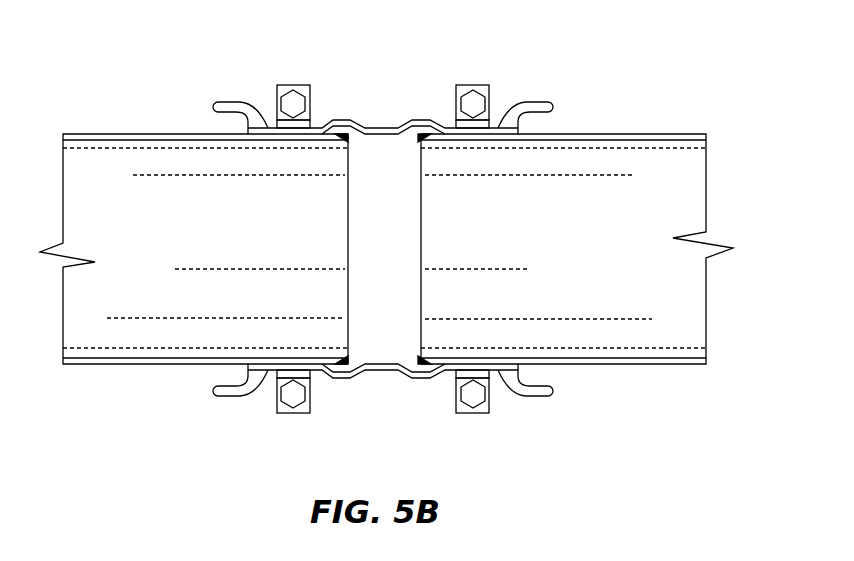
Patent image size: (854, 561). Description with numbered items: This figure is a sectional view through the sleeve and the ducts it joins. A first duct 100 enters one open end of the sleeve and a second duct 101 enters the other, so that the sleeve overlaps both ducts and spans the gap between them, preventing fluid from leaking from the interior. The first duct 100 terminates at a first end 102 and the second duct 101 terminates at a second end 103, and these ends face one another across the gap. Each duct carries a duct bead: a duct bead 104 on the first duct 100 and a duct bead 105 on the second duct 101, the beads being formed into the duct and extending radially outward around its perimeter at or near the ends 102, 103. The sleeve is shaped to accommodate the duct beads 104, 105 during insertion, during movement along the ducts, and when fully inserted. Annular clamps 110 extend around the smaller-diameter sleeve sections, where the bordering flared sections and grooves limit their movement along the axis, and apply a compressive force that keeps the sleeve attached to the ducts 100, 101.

The first duct 100 is at (135, 134).
The second duct 101 is at (632, 134).
The first end 102 is at (348, 196).
The second end 103 is at (421, 307).
The duct bead 104 is at (340, 377).
The duct bead 105 is at (431, 378).
The clamp 110 is at (290, 97).